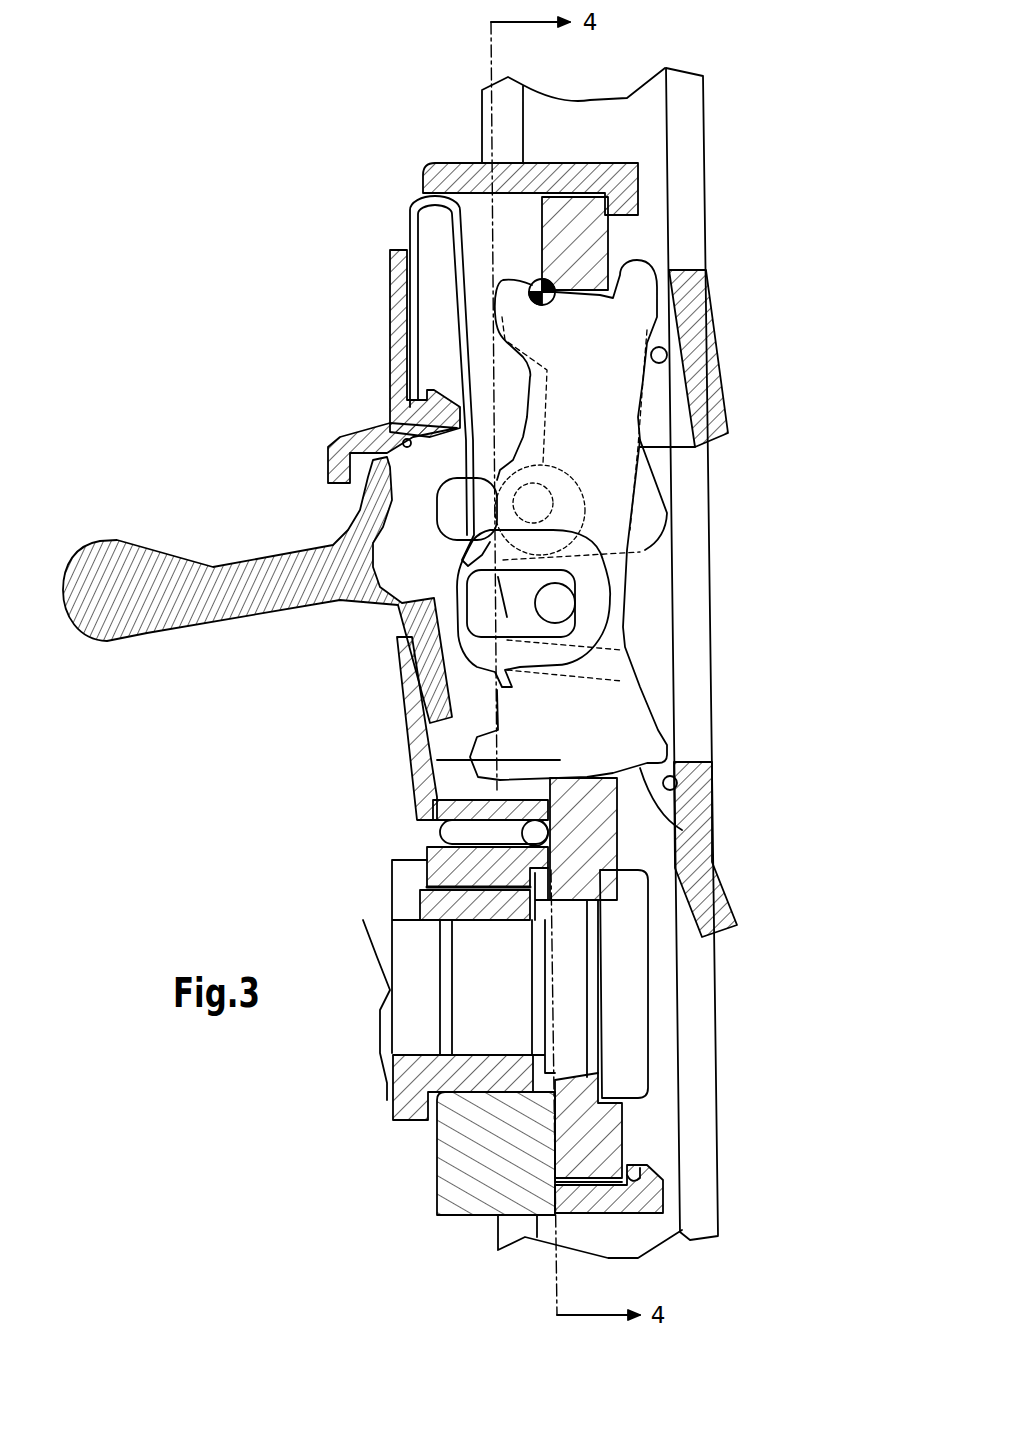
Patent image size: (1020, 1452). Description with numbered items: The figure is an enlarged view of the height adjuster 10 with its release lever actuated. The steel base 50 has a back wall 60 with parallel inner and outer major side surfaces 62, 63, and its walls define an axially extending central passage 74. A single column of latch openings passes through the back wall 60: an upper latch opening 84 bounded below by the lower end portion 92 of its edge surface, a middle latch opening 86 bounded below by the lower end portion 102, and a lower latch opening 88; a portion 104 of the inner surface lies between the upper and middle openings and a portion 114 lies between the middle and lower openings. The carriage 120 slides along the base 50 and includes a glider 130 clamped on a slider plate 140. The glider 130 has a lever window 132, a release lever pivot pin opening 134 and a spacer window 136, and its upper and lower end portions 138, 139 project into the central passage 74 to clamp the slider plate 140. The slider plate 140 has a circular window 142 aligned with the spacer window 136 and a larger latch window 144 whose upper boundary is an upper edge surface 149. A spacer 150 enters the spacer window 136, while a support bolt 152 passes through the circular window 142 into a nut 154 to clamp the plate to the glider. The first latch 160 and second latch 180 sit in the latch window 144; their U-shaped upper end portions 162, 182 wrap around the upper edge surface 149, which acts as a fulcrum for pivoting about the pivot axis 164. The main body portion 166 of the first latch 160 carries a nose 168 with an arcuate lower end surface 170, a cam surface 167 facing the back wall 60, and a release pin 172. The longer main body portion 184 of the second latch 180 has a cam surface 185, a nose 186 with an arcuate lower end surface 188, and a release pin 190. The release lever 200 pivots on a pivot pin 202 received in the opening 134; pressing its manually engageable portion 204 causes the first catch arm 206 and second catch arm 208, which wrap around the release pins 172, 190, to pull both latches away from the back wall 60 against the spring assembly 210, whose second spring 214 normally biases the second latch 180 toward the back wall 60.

The height adjuster 10 is at (853, 158).
The base 50 is at (722, 1195).
The back wall 60 is at (708, 298).
The inner major side surface 62 is at (672, 838).
The outer major side surface 63 is at (712, 855).
The central passage 74 is at (647, 115).
The upper latch opening 84 is at (687, 122).
The middle latch opening 86 is at (697, 540).
The lower latch opening 88 is at (697, 985).
The lower end portion 92 is at (690, 265).
The lower end portion 102 is at (700, 757).
The portion of inner major side surface 104 is at (667, 355).
The portion of inner major side surface 114 is at (677, 784).
The carriage 120 is at (262, 718).
The glider 130 is at (435, 1205).
The lever window 132 is at (390, 423).
The release lever pivot pin opening 134 is at (430, 830).
The spacer window 136 is at (437, 1073).
The upper end portion 138 is at (468, 165).
The lower end portion 139 is at (575, 1213).
The slider plate 140 is at (626, 1138).
The circular window 142 is at (640, 1075).
The latch window 144 is at (420, 760).
The upper edge surface 149 is at (655, 318).
The spacer 150 is at (413, 1123).
The support bolt 152 is at (640, 1025).
The nut 154 is at (387, 1063).
The first latch 160 is at (657, 476).
The U-shaped upper end portion 162 is at (523, 233).
The pivot axis 164 is at (503, 280).
The main body portion 166 is at (640, 382).
The cam surface 167 is at (695, 447).
The nose 168 is at (648, 527).
The arcuate lower end surface 170 is at (640, 553).
The release pin 172 is at (537, 500).
The second latch 180 is at (630, 591).
The U-shaped upper end portion 182 is at (655, 255).
The main body portion 184 is at (618, 667).
The cam surface 185 is at (653, 697).
The nose 186 is at (667, 735).
The arcuate lower end surface 188 is at (712, 830).
The release pin 190 is at (555, 603).
The release lever 200 is at (257, 613).
The pivot pin 202 is at (520, 838).
The manually engageable portion 204 is at (115, 540).
The first catch arm 206 is at (655, 425).
The second catch arm 208 is at (600, 620).
The spring assembly 210 is at (410, 215).
The second spring 214 is at (467, 362).